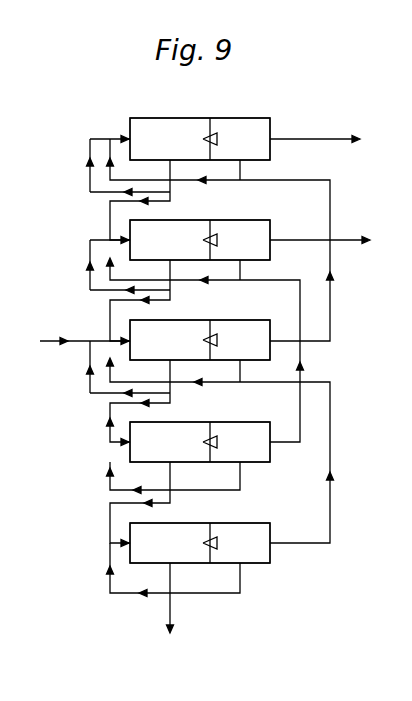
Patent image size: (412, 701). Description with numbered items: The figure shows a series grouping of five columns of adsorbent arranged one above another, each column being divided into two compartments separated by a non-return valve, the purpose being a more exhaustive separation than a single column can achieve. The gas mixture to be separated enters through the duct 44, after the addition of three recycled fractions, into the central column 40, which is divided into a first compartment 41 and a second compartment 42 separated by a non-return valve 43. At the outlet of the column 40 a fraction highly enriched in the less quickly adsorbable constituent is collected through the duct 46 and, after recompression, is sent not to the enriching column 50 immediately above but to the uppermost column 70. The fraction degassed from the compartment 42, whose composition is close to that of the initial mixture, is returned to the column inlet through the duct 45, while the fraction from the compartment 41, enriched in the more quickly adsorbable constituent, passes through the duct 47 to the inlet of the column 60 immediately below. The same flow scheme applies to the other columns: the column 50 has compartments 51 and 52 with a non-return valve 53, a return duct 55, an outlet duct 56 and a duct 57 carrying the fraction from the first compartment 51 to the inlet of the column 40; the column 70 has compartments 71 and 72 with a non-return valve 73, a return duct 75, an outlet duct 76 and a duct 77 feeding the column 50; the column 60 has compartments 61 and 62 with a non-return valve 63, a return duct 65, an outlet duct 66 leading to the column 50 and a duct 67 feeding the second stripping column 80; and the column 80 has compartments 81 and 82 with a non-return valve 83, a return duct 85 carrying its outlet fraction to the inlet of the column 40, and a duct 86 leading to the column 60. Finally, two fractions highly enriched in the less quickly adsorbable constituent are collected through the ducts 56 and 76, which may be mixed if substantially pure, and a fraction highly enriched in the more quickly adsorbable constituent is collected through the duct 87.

The column 40 is at (203, 320).
The compartment 41 is at (172, 329).
The compartment 42 is at (245, 329).
The non-return valve 43 is at (217, 340).
The duct 44 is at (85, 334).
The duct 45 is at (88, 389).
The duct 46 is at (331, 312).
The duct 47 is at (110, 421).
The enriching column 50 is at (203, 220).
The first compartment 51 is at (172, 229).
The compartment 52 is at (245, 229).
The non-return valve 53 is at (217, 240).
The duct 55 is at (88, 289).
The duct 56 is at (292, 240).
The duct 57 is at (110, 314).
The column of adsorbent 60 is at (203, 422).
The compartment 61 is at (172, 431).
The compartment 62 is at (245, 431).
The non-return valve 63 is at (217, 442).
The duct 65 is at (240, 478).
The duct 66 is at (301, 352).
The duct 67 is at (110, 529).
The column 70 is at (203, 118).
The compartment 71 is at (172, 127).
The compartment 72 is at (245, 127).
The non-return valve 73 is at (217, 139).
The duct 75 is at (88, 186).
The duct 76 is at (307, 139).
The duct 77 is at (110, 219).
The second stripping column 80 is at (203, 523).
The compartment 81 is at (172, 532).
The compartment 82 is at (245, 532).
The non-return valve 83 is at (217, 543).
The duct 85 is at (188, 593).
The duct 86 is at (329, 517).
The duct 87 is at (172, 610).